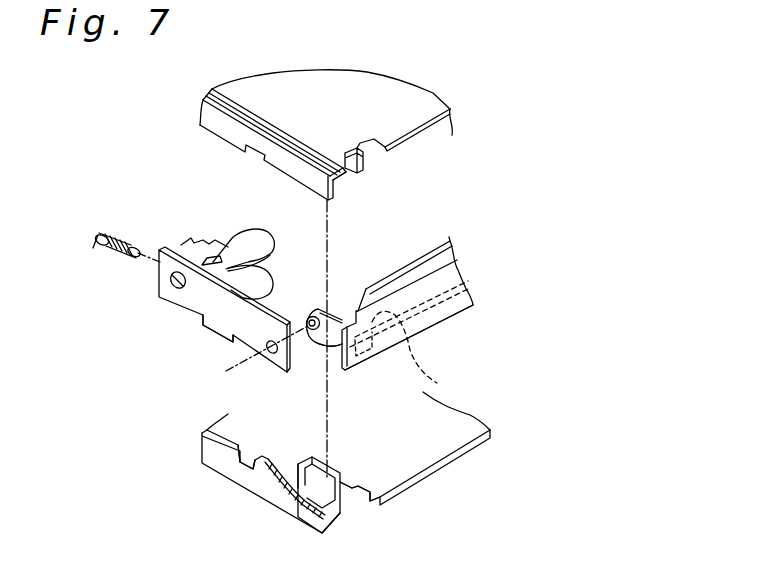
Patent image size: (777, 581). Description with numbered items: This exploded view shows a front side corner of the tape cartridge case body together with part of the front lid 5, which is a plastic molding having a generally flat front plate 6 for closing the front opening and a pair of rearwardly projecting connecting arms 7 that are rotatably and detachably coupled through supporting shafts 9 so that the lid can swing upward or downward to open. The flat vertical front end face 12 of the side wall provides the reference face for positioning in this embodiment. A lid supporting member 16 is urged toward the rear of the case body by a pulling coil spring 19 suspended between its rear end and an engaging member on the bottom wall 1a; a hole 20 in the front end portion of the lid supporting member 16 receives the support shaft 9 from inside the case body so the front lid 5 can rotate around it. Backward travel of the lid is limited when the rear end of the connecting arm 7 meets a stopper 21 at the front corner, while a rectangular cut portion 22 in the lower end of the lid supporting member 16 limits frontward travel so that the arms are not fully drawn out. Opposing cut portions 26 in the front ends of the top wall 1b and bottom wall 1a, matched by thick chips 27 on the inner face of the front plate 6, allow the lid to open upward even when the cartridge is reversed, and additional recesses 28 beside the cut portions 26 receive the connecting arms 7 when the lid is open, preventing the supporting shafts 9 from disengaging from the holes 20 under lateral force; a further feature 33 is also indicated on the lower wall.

The bottom wall 1a is at (433, 450).
The top wall 1b is at (400, 86).
The front lid 5 is at (437, 327).
The front plate 6 is at (453, 268).
The connecting arm 7 is at (320, 335).
The supporting shaft 9 is at (307, 318).
The flat vertical front end face 12 is at (337, 192).
The lid supporting member 16 is at (183, 307).
The pulling coil spring 19 is at (108, 226).
The hole 20 is at (266, 353).
The stopper 21 is at (310, 473).
The cut portion 22 is at (217, 325).
The cut portion 26 is at (378, 150).
The thick chip 27 is at (423, 356).
The additional recess 28 is at (345, 155).
The recess 33 is at (243, 463).